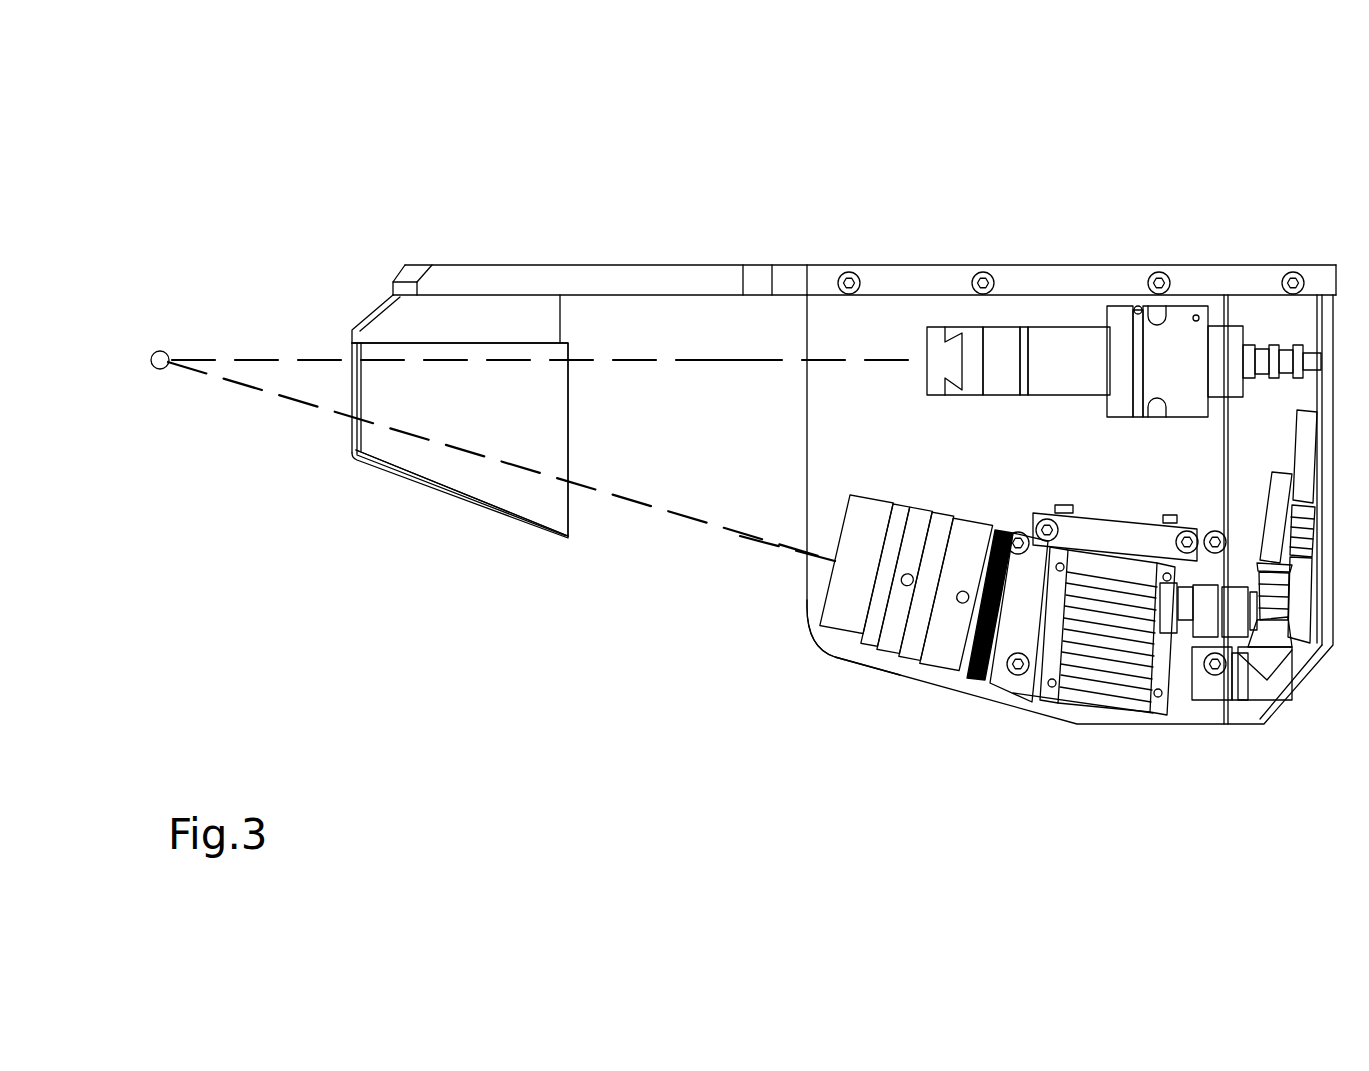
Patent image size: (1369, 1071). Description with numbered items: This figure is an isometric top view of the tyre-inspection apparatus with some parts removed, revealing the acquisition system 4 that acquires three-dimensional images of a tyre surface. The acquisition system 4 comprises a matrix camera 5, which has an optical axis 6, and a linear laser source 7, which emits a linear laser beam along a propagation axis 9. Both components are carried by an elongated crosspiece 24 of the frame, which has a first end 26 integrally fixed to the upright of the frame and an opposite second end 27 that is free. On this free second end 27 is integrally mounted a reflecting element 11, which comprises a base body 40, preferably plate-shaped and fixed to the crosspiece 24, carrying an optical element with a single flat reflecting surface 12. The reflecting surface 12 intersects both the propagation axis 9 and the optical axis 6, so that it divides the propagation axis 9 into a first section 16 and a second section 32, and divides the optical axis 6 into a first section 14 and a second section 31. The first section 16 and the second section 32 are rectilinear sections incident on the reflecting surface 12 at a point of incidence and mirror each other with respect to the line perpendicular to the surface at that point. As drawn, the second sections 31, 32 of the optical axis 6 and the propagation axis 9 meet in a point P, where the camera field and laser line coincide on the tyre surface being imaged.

The point P is at (157, 352).
The acquisition system 4 is at (683, 618).
The matrix camera 5 is at (929, 687).
The optical axis 6 is at (702, 517).
The linear laser source 7 is at (1195, 288).
The propagation axis 9 is at (733, 360).
The reflecting element 11 is at (449, 526).
The reflecting surface 12 is at (497, 483).
The first section of the optical axis 14 is at (767, 543).
The first section of the propagation axis 16 is at (610, 360).
The crosspiece 24 is at (903, 279).
The first end of the crosspiece 26 is at (1076, 218).
The second end of the crosspiece 27 is at (524, 233).
The second section of the optical axis 31 is at (413, 437).
The second section of the propagation axis 32 is at (470, 358).
The base body 40 is at (405, 327).